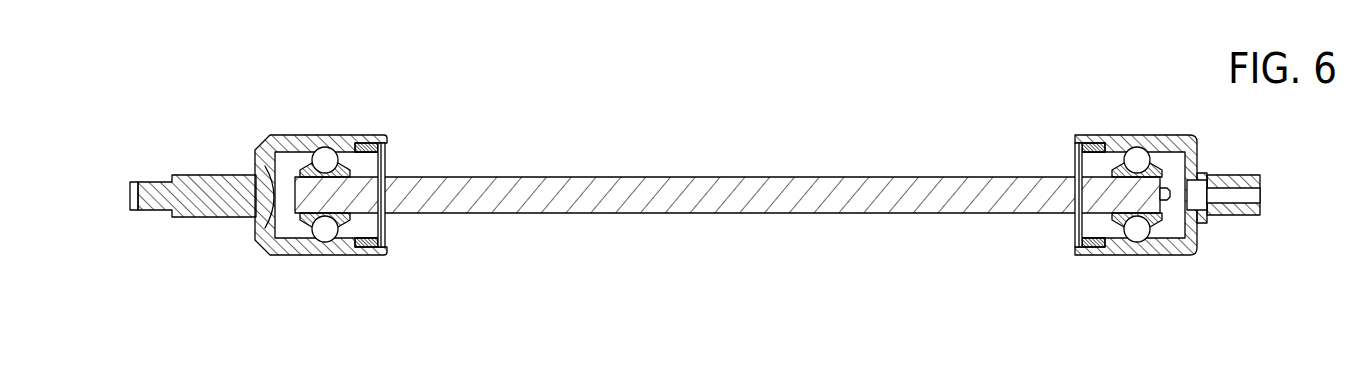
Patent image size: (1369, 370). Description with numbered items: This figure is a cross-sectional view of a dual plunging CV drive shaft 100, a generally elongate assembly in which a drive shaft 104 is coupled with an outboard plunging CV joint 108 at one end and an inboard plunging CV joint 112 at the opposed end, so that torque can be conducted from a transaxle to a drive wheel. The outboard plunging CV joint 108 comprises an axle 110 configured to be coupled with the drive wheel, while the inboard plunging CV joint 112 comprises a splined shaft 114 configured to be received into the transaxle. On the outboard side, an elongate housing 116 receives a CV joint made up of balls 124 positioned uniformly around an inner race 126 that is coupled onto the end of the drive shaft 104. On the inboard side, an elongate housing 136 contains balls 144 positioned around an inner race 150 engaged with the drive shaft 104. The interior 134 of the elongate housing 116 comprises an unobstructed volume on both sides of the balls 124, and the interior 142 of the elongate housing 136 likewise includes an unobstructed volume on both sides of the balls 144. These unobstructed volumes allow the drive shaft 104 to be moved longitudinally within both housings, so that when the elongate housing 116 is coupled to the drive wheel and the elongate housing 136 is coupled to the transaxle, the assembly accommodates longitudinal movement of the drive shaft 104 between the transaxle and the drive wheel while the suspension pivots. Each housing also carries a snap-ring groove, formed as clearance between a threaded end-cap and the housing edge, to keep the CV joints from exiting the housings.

The dual plunging CV drive shaft 100 is at (783, 106).
The drive shaft 104 is at (640, 214).
The outboard plunging CV joint 108 is at (284, 112).
The axle 110 is at (220, 174).
The inboard plunging CV joint 112 is at (1163, 276).
The splined shaft 114 is at (1230, 216).
The elongate housing 116 is at (333, 243).
The balls 124 is at (328, 158).
The inner race 126 is at (341, 221).
The interior 134 is at (365, 163).
The elongate housing 136 is at (1127, 256).
The interior 142 is at (1095, 163).
The balls 144 is at (1138, 158).
The inner race 150 is at (1117, 222).